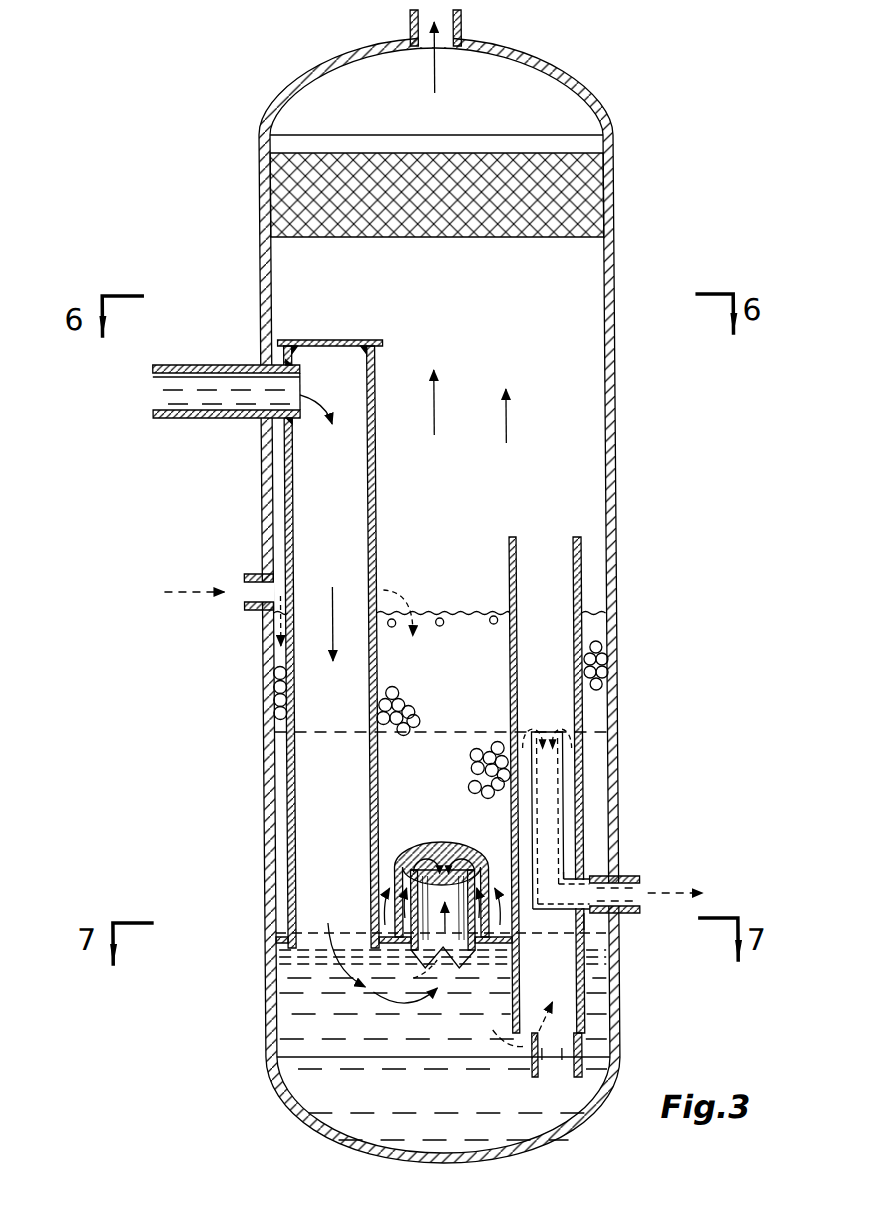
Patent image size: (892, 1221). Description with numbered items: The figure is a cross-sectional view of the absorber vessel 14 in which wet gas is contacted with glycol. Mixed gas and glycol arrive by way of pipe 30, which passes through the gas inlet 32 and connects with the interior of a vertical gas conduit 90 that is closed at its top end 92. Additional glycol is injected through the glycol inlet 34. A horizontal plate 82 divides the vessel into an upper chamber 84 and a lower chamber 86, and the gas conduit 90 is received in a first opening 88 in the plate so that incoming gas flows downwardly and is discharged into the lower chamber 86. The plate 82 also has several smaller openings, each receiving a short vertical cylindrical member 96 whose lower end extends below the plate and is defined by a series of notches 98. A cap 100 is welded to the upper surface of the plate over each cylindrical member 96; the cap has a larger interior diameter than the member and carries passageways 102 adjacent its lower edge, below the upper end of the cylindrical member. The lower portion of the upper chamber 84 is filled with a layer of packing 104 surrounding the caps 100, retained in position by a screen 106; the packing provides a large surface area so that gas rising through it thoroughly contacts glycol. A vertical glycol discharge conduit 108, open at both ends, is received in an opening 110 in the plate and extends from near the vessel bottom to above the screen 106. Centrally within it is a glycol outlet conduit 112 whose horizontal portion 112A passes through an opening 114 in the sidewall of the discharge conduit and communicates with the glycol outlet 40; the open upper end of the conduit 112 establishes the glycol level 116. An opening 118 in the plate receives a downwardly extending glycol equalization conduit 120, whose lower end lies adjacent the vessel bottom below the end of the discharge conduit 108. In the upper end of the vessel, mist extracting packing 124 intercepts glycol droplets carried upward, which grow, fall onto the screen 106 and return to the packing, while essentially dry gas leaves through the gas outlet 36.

The absorber vessel 14 is at (605, 490).
The pipe 30 is at (200, 419).
The gas inlet 32 is at (256, 364).
The glycol inlet 34 is at (253, 612).
The gas outlet 36 is at (462, 25).
The glycol outlet 40 is at (621, 874).
The horizontal plate 82 is at (363, 920).
The upper chamber 84 is at (443, 541).
The lower chamber 86 is at (374, 1104).
The first opening 88 is at (290, 934).
The vertical gas conduit 90 is at (372, 522).
The top end 92 is at (331, 340).
The cylindrical member 96 is at (395, 860).
The notches 98 is at (371, 981).
The cap 100 is at (419, 841).
The passageways 102 is at (489, 860).
The packing 104 is at (420, 689).
The screen 106 is at (437, 612).
The glycol discharge conduit 108 is at (505, 648).
The opening 110 is at (512, 939).
The glycol outlet conduit 112 is at (546, 782).
The horizontal portion 112A is at (528, 905).
The opening 114 is at (571, 905).
The glycol level 116 is at (447, 732).
The opening 118 is at (578, 930).
The glycol equalization conduit 120 is at (516, 1062).
The mist extracting packing 124 is at (592, 187).